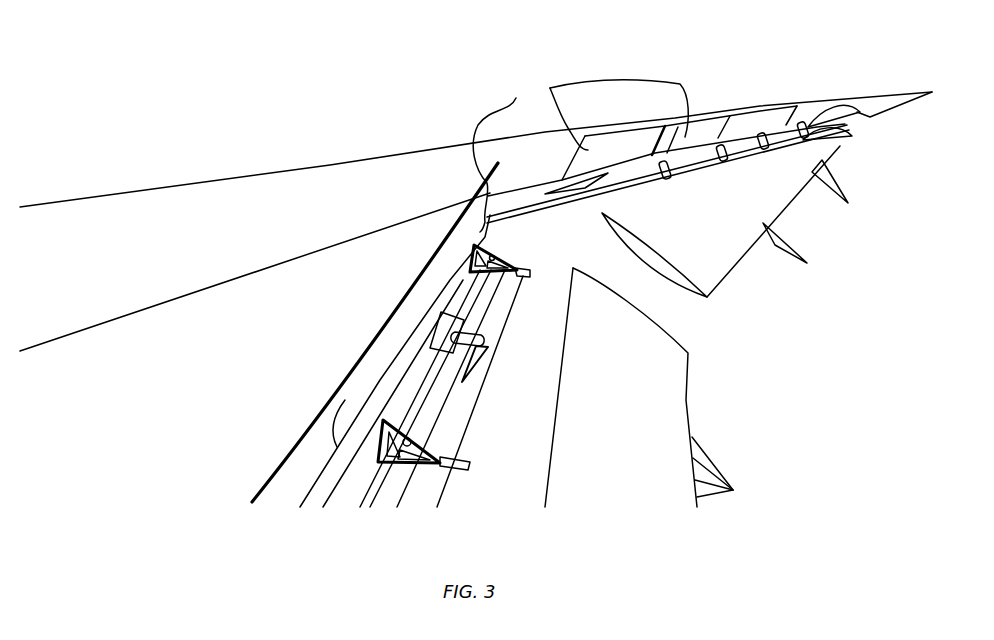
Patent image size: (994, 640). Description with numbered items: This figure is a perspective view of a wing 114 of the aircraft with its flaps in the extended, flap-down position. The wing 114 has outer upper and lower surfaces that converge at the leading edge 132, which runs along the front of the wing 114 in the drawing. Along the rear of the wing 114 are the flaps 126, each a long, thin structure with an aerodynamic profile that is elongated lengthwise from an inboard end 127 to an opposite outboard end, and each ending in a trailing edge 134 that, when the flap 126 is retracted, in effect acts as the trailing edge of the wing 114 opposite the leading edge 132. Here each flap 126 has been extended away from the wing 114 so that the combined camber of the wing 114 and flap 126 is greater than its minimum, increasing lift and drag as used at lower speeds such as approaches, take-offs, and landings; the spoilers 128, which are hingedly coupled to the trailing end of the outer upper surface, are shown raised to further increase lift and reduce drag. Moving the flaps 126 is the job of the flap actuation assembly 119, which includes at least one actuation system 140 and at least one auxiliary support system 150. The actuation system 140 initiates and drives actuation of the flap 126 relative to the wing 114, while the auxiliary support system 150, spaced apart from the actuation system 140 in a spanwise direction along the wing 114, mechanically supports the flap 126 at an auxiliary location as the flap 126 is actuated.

The wing 114 is at (88, 225).
The flap actuation assembly 119 is at (800, 123).
The flap 126 is at (720, 242).
The inboard end 127 is at (840, 146).
The spoiler 128 is at (580, 156).
The leading edge 132 is at (163, 183).
The trailing edge 134 is at (717, 287).
The actuation system 140 is at (740, 164).
The auxiliary support system 150 is at (773, 143).